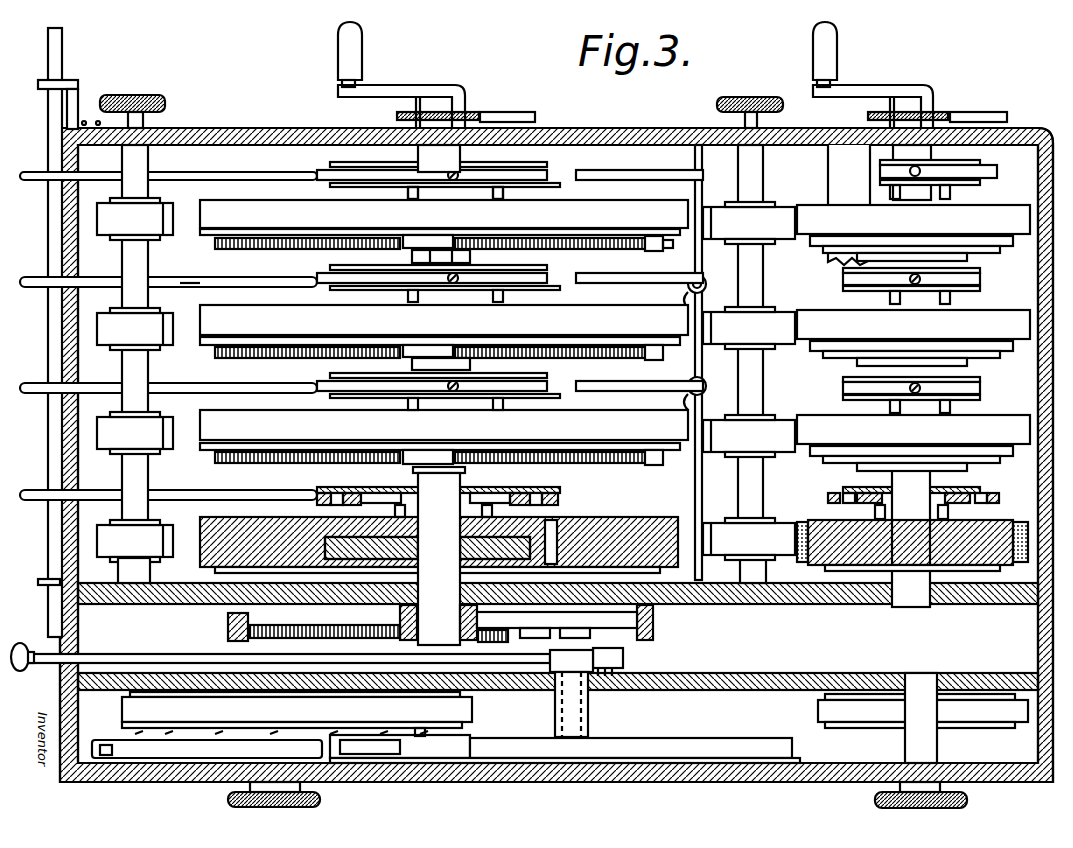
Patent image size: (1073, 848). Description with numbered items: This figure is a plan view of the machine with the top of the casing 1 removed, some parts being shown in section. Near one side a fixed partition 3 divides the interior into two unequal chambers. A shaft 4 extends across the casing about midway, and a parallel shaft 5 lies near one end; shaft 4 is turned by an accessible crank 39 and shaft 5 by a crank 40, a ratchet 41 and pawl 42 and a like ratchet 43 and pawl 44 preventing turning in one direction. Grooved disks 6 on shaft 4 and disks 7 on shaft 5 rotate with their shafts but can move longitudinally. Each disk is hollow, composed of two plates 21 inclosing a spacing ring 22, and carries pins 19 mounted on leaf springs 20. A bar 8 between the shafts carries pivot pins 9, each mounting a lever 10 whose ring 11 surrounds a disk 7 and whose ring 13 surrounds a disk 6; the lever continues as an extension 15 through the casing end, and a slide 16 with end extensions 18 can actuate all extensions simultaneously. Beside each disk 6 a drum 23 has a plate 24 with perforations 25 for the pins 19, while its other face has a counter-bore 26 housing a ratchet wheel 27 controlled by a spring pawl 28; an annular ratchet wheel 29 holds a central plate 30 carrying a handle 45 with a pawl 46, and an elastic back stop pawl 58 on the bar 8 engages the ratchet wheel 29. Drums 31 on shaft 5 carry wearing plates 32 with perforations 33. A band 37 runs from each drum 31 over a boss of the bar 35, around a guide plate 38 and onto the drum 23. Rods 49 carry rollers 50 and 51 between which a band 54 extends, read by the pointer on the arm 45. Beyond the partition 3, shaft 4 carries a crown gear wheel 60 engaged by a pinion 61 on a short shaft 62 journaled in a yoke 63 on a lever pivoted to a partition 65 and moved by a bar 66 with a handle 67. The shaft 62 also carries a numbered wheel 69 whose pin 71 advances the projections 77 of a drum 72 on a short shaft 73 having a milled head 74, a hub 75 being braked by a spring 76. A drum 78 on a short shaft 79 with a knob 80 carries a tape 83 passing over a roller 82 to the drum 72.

The casing 1 is at (674, 136).
The fixed partition 3 is at (195, 603).
The shaft 4 is at (450, 153).
The shaft 5 is at (930, 145).
The grooved wheel or disk 6 is at (335, 163).
The grooved wheel or disk 7 is at (975, 168).
The bar 8 is at (698, 374).
The pivot pin 9 is at (688, 286).
The lever 10 is at (612, 393).
The ring 11 is at (965, 284).
The ring 13 is at (333, 282).
The extension 15 is at (80, 284).
The slide 16 is at (60, 330).
The extension 18 is at (50, 47).
The pin 19 is at (482, 198).
The leaf spring 20 is at (397, 512).
The plate 21 is at (540, 282).
The spacing ring 22 is at (507, 500).
The roller or drum 23 is at (218, 198).
The plate 24 is at (333, 503).
The perforation 25 is at (567, 503).
The counter-bore 26 is at (388, 600).
The ratchet wheel 27 is at (420, 480).
The spring pawl 28 is at (749, 539).
The annular ratchet wheel 29 is at (237, 575).
The central plate 30 is at (395, 550).
The drum or roller 31 is at (985, 381).
The wearing plate 32 is at (990, 521).
The perforation 33 is at (912, 542).
The bar 35 is at (845, 152).
The band or tape 37 is at (325, 348).
The guide plate 38 is at (705, 210).
The crank 39 is at (370, 88).
The crank 40 is at (848, 93).
The ratchet 41 is at (466, 112).
The pawl 42 is at (498, 113).
The ratchet 43 is at (912, 112).
The pawl 44 is at (958, 113).
The handle or arm 45 is at (445, 258).
The pawl 46 is at (415, 248).
The rod 49 is at (170, 88).
The roller 50 is at (100, 208).
The roller 51 is at (773, 523).
The tape or band 54 is at (186, 283).
The elastic back stop pawl 58 is at (702, 322).
The crown gear wheel 60 is at (655, 621).
The pinion 61 is at (627, 645).
The short shaft 62 is at (590, 690).
The yoke 63 is at (547, 672).
The partition 65 is at (858, 677).
The rod or bar 66 is at (100, 658).
The manipulating handle 67 is at (25, 672).
The wheel 69 is at (670, 753).
The pin 71 is at (420, 733).
The drum 72 is at (350, 741).
The short shaft 73 is at (262, 755).
The knob or milled head 74 is at (322, 799).
The hub 75 is at (220, 740).
The spring 76 is at (152, 742).
The pin or projection 77 is at (122, 726).
The drum 78 is at (975, 727).
The short shaft 79 is at (905, 752).
The knob or milled head 80 is at (875, 802).
The roller 82 is at (413, 667).
The tape or band 83 is at (667, 714).